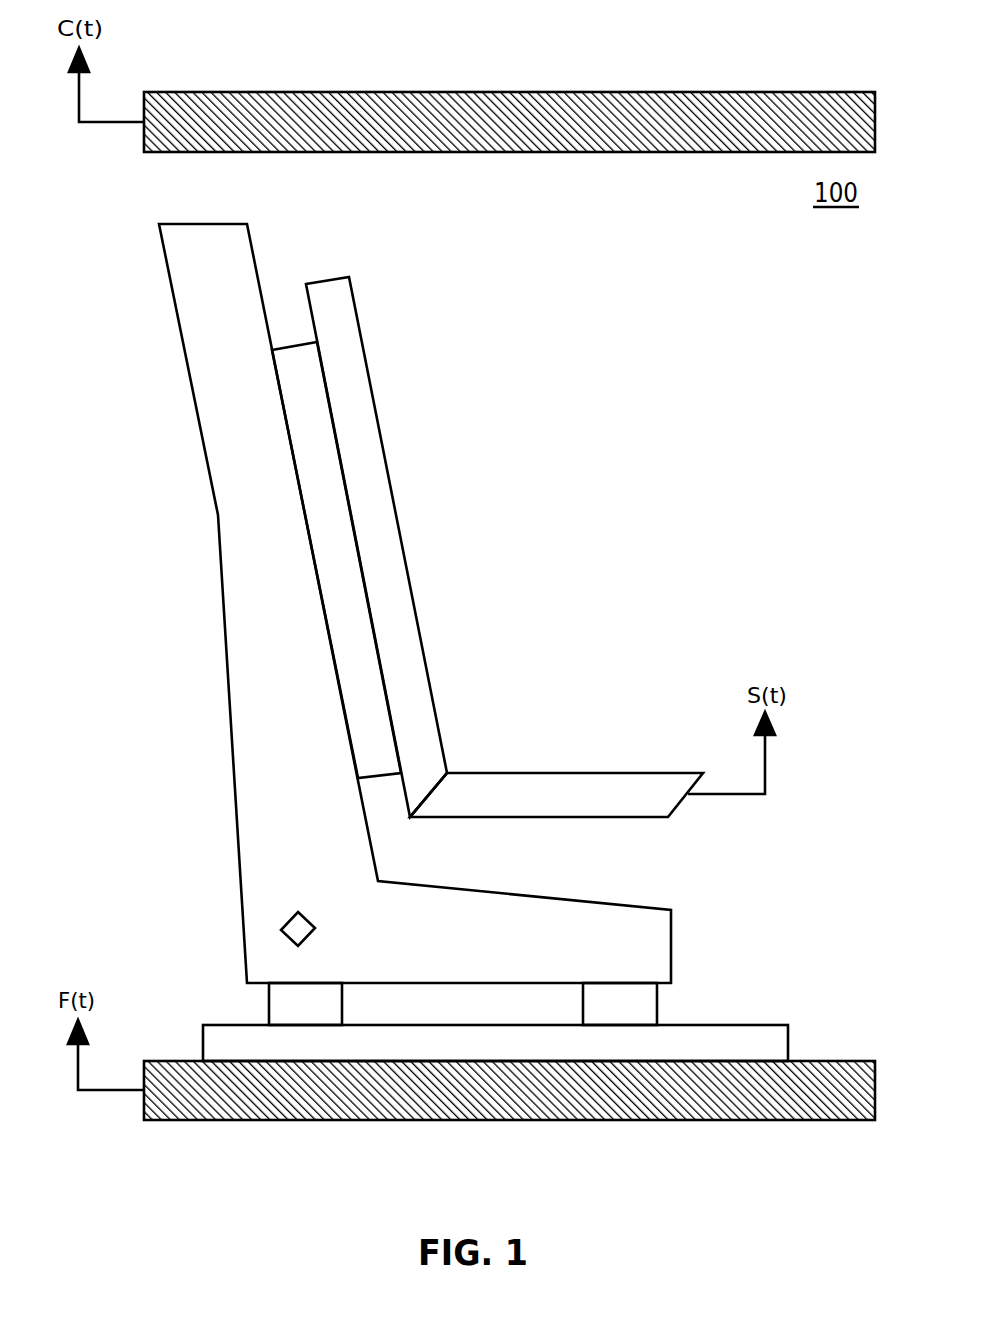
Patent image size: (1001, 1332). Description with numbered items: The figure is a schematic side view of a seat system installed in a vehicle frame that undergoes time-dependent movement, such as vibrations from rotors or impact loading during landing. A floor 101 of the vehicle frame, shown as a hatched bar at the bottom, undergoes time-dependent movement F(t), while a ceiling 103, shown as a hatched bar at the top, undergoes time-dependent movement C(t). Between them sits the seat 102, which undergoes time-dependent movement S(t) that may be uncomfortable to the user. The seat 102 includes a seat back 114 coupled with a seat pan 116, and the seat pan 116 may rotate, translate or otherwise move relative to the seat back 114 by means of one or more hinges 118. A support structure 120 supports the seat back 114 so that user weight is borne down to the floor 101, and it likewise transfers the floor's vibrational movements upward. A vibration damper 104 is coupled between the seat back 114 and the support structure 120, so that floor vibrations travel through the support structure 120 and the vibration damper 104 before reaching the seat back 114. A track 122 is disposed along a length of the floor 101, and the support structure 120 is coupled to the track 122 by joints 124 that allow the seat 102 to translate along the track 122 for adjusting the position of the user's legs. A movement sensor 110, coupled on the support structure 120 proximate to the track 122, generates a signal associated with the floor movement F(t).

The floor 101 is at (198, 1120).
The seat 102 is at (402, 264).
The ceiling 103 is at (686, 92).
The vibration damper 104 is at (335, 673).
The movement sensor 110 is at (280, 930).
The seat back 114 is at (370, 368).
The seat pan 116 is at (607, 773).
The hinge 118 is at (448, 769).
The support structure 120 is at (224, 600).
The track 122 is at (748, 1025).
The joints 124 is at (268, 1007).